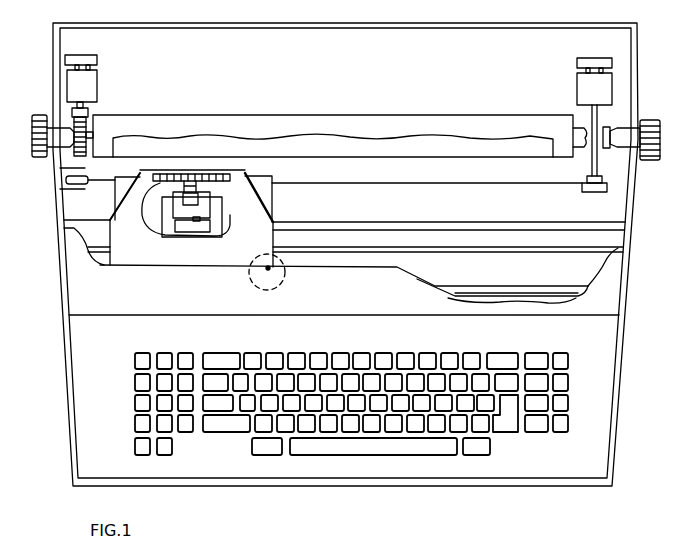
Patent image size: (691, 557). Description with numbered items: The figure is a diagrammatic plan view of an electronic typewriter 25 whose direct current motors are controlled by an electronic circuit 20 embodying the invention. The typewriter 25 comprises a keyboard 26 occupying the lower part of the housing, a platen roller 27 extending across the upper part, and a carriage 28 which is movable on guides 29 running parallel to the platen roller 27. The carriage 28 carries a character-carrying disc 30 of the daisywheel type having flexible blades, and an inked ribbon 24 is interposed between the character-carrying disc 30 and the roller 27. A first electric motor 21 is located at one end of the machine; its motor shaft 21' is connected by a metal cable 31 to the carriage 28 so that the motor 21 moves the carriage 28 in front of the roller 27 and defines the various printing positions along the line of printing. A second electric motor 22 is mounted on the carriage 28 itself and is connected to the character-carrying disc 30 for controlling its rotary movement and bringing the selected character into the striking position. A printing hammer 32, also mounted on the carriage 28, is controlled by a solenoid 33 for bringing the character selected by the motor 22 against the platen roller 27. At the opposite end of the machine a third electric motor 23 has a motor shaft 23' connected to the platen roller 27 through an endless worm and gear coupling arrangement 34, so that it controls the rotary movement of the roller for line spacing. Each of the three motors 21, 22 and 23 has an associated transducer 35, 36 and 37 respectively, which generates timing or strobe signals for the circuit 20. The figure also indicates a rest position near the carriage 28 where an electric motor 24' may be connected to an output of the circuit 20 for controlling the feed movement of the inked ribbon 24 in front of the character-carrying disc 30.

The electronic circuit 20 is at (523, 287).
The electric motor 21 is at (571, 89).
The motor shaft 21' is at (597, 117).
The electric motor 22 is at (233, 222).
The electric motor 23 is at (63, 79).
The motor shaft 23' is at (107, 73).
The inked ribbon 24 is at (191, 194).
The electric motor 24' is at (283, 282).
The typewriter 25 is at (606, 284).
The keyboard 26 is at (549, 440).
The platen roller 27 is at (446, 116).
The carriage 28 is at (262, 188).
The guides 29 is at (410, 250).
The character-carrying disc 30 is at (213, 173).
The metal cable 31 is at (494, 184).
The printing hammer 32 is at (170, 176).
The solenoid 33 is at (187, 198).
The endless worm and gear coupling arrangement 34 is at (100, 108).
The transducer 35 is at (597, 62).
The transducer 36 is at (190, 219).
The transducer 37 is at (88, 60).